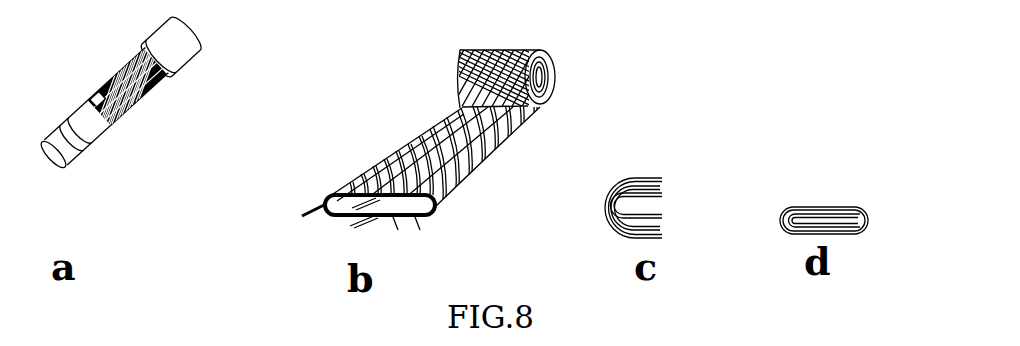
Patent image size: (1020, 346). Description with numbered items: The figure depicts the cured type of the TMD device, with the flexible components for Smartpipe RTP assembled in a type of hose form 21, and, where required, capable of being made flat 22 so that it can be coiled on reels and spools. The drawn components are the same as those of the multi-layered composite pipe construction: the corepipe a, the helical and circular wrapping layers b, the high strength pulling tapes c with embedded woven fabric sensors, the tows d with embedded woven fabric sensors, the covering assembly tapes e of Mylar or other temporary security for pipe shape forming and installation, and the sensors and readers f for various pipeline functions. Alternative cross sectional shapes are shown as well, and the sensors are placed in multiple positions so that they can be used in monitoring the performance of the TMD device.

The hose form 21 is at (185, 70).
The flat form 22 is at (521, 130).
The corepipe a is at (69, 160).
The wrapping layers b is at (110, 118).
The high strength pulling tapes c is at (96, 100).
The tows d is at (158, 87).
The covering assembly tapes e is at (662, 204).
The sensors and readers f is at (168, 78).